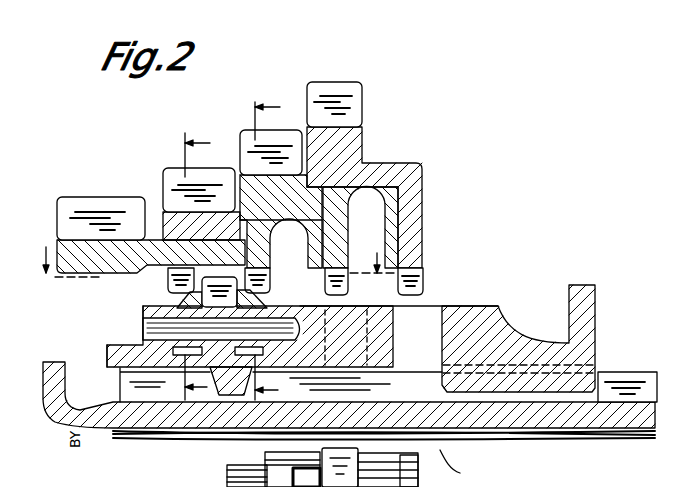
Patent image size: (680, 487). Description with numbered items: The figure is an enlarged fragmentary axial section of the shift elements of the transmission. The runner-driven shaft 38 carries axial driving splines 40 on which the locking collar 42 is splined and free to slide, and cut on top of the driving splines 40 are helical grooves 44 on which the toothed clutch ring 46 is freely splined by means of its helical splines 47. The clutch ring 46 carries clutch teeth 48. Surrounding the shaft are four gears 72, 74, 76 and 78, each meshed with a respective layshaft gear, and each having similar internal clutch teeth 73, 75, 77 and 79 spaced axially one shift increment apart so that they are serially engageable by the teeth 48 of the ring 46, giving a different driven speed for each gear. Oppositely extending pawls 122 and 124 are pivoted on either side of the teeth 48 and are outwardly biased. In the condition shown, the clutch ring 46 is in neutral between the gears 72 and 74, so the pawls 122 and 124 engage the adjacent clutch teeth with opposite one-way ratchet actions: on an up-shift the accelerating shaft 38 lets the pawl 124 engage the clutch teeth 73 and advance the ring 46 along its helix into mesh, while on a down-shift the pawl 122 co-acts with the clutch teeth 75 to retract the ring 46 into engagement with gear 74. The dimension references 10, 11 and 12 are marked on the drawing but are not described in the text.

The reference plane 10 is at (217, 273).
The reference line 11 is at (181, 260).
The reference line 12 is at (259, 245).
The driven shaft 38 is at (562, 413).
The axial driving splines 40 is at (440, 395).
The locking collar 42 is at (476, 320).
The helical grooves 44 is at (219, 394).
The toothed clutch ring 46 is at (140, 353).
The helical splines 47 is at (241, 382).
The clutch teeth 48 is at (193, 293).
The gear 72 is at (103, 206).
The internal clutch teeth 73 is at (170, 280).
The gear 74 is at (166, 179).
The internal clutch teeth 75 is at (268, 277).
The gear 76 is at (246, 136).
The internal clutch teeth 77 is at (349, 272).
The gear 78 is at (322, 87).
The internal clutch teeth 79 is at (421, 277).
The pawl 122 is at (263, 302).
The pawl 124 is at (145, 319).